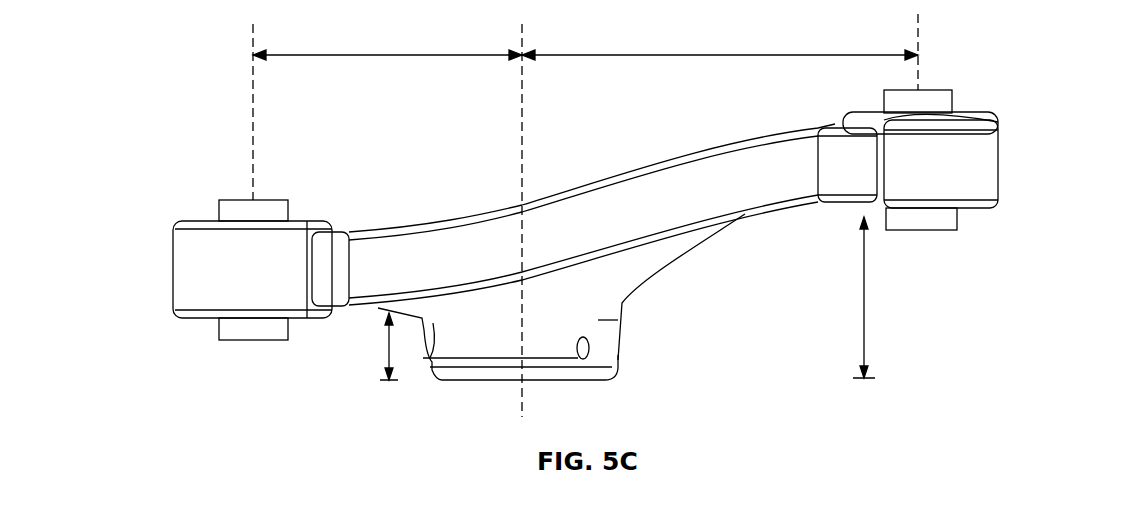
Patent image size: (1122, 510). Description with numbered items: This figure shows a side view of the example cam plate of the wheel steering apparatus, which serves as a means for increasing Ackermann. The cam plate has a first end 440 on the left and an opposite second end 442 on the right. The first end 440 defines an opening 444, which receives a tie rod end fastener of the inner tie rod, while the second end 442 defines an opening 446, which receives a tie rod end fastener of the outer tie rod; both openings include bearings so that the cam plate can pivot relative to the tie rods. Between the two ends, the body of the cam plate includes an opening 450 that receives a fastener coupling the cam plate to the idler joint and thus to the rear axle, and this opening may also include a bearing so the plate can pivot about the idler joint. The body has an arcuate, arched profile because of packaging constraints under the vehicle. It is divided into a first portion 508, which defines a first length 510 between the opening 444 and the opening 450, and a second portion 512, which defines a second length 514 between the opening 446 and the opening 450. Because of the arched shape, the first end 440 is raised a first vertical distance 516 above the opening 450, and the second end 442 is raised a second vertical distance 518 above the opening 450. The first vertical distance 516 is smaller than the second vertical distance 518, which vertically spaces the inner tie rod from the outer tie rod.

The first end 440 is at (177, 280).
The second end 442 is at (1000, 152).
The opening 444 is at (258, 338).
The opening 446 is at (922, 230).
The opening 450 is at (548, 380).
The first portion 508 is at (328, 393).
The first length 510 is at (383, 58).
The second portion 512 is at (748, 384).
The second length 514 is at (712, 58).
The first vertical distance 516 is at (388, 345).
The second vertical distance 518 is at (864, 300).